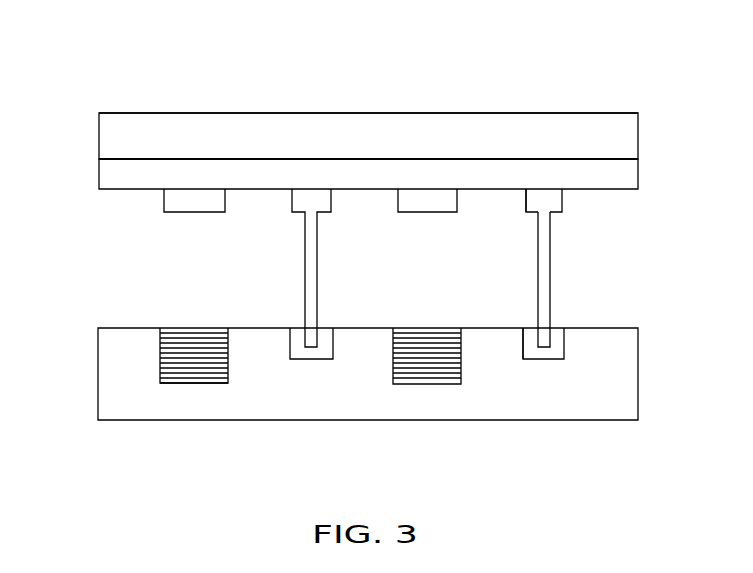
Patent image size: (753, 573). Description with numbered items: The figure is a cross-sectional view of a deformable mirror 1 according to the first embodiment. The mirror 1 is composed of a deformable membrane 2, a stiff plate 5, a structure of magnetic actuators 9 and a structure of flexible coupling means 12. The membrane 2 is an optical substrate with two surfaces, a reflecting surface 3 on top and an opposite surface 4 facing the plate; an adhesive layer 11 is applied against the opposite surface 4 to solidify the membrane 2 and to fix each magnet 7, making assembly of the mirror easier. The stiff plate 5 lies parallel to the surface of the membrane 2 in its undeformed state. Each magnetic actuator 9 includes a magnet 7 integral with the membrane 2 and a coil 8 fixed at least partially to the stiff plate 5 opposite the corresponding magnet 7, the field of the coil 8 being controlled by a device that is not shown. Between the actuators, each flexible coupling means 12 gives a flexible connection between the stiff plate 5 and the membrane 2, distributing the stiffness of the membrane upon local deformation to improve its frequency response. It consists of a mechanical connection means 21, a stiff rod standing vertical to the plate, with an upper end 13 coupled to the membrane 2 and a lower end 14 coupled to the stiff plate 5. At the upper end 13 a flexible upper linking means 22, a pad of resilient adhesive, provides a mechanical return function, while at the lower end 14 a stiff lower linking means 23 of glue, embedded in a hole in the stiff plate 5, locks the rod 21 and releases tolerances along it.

The deformable mirror 1 is at (380, 105).
The deformable membrane 2 is at (578, 133).
The reflecting surface 3 is at (170, 113).
The opposite surface 4 is at (127, 158).
The stiff plate 5 is at (603, 396).
The magnet 7 is at (177, 202).
The coil 8 is at (190, 350).
The magnetic actuator 9 is at (180, 398).
The adhesive layer 11 is at (620, 175).
The flexible coupling means 12 is at (557, 280).
The upper end 13 is at (518, 216).
The lower end 14 is at (513, 335).
The mechanical connection means 21 is at (545, 316).
The upper linking means 22 is at (562, 205).
The lower linking means 23 is at (560, 343).